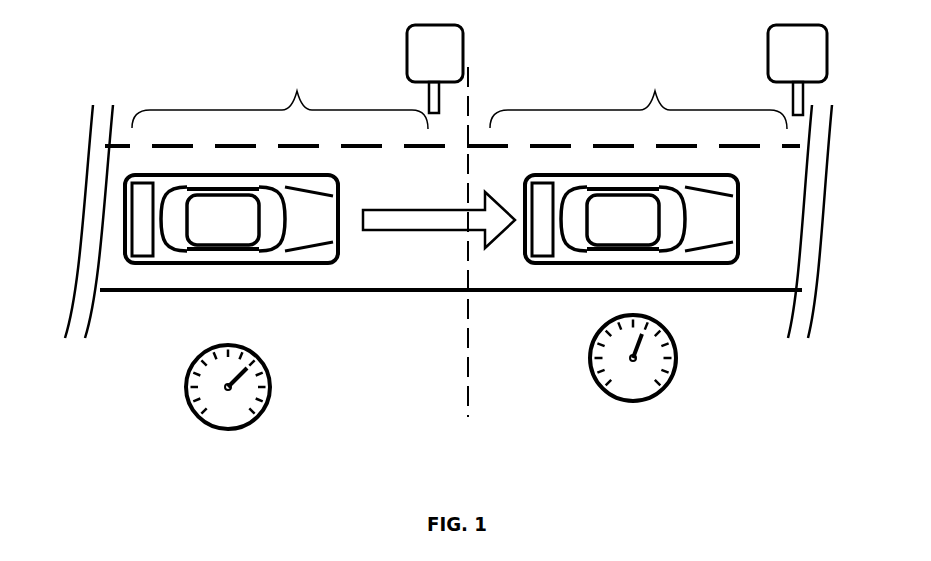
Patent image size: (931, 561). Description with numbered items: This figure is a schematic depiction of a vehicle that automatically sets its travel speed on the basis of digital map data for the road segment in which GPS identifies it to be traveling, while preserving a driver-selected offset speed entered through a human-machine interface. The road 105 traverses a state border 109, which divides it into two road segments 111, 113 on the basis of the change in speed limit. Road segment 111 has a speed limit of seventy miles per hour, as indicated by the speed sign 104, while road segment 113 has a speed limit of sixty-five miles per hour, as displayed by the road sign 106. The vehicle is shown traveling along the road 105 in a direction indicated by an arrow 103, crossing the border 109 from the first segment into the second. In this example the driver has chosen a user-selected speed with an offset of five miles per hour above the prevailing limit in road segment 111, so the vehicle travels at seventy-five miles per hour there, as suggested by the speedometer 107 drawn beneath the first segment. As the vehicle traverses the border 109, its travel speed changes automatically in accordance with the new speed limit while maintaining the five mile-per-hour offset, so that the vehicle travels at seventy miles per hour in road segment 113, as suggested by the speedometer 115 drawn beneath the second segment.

The direction of travel arrow 103 is at (422, 230).
The speed sign 104 is at (407, 50).
The road 105 is at (236, 292).
The road sign 106 is at (768, 52).
The speedometer in first zone 107 is at (230, 445).
The state border 109 is at (467, 360).
The road segment 111 is at (280, 94).
The road segment 113 is at (638, 93).
The speedometer in second zone 115 is at (630, 445).